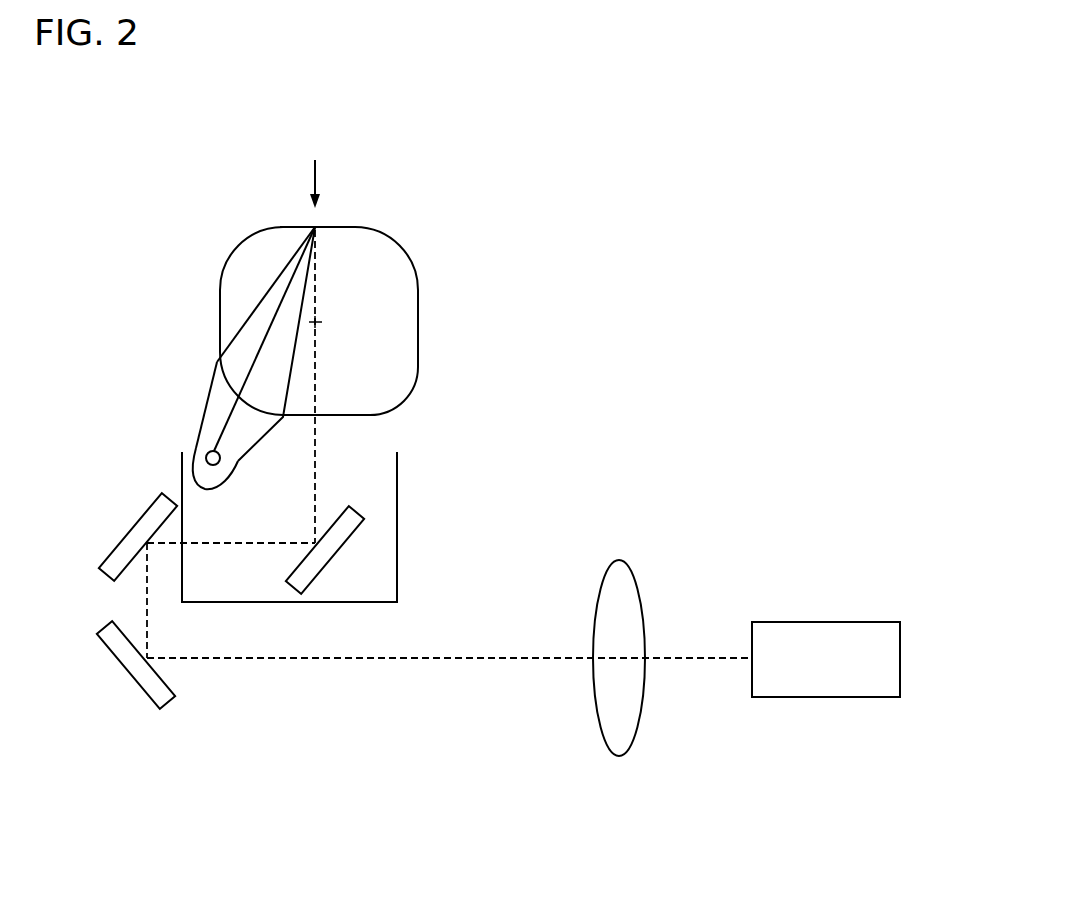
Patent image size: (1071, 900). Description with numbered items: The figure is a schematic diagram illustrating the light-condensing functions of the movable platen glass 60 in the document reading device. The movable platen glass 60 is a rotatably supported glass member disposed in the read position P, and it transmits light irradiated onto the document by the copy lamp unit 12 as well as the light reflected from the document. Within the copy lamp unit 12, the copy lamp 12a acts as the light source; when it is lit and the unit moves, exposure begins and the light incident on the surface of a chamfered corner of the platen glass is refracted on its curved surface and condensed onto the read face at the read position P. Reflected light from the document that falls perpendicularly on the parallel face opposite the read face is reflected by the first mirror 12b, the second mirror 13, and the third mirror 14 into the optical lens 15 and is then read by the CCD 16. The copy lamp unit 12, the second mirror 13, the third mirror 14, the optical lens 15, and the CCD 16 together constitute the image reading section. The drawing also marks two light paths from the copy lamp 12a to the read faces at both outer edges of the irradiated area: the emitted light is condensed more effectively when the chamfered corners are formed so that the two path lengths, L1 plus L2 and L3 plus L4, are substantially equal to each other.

The movable platen glass 60 is at (446, 273).
The copy lamp unit 12 is at (414, 595).
The copy lamp 12a is at (215, 358).
The first mirror 12b is at (293, 583).
The second mirror 13 is at (110, 573).
The third mirror 14 is at (137, 673).
The optical lens 15 is at (628, 583).
The CCD 16 is at (815, 623).
The read position P is at (314, 171).
The light path length L1 is at (198, 405).
The light path length L2 is at (266, 294).
The light path length L3 is at (276, 344).
The light path length L4 is at (316, 386).